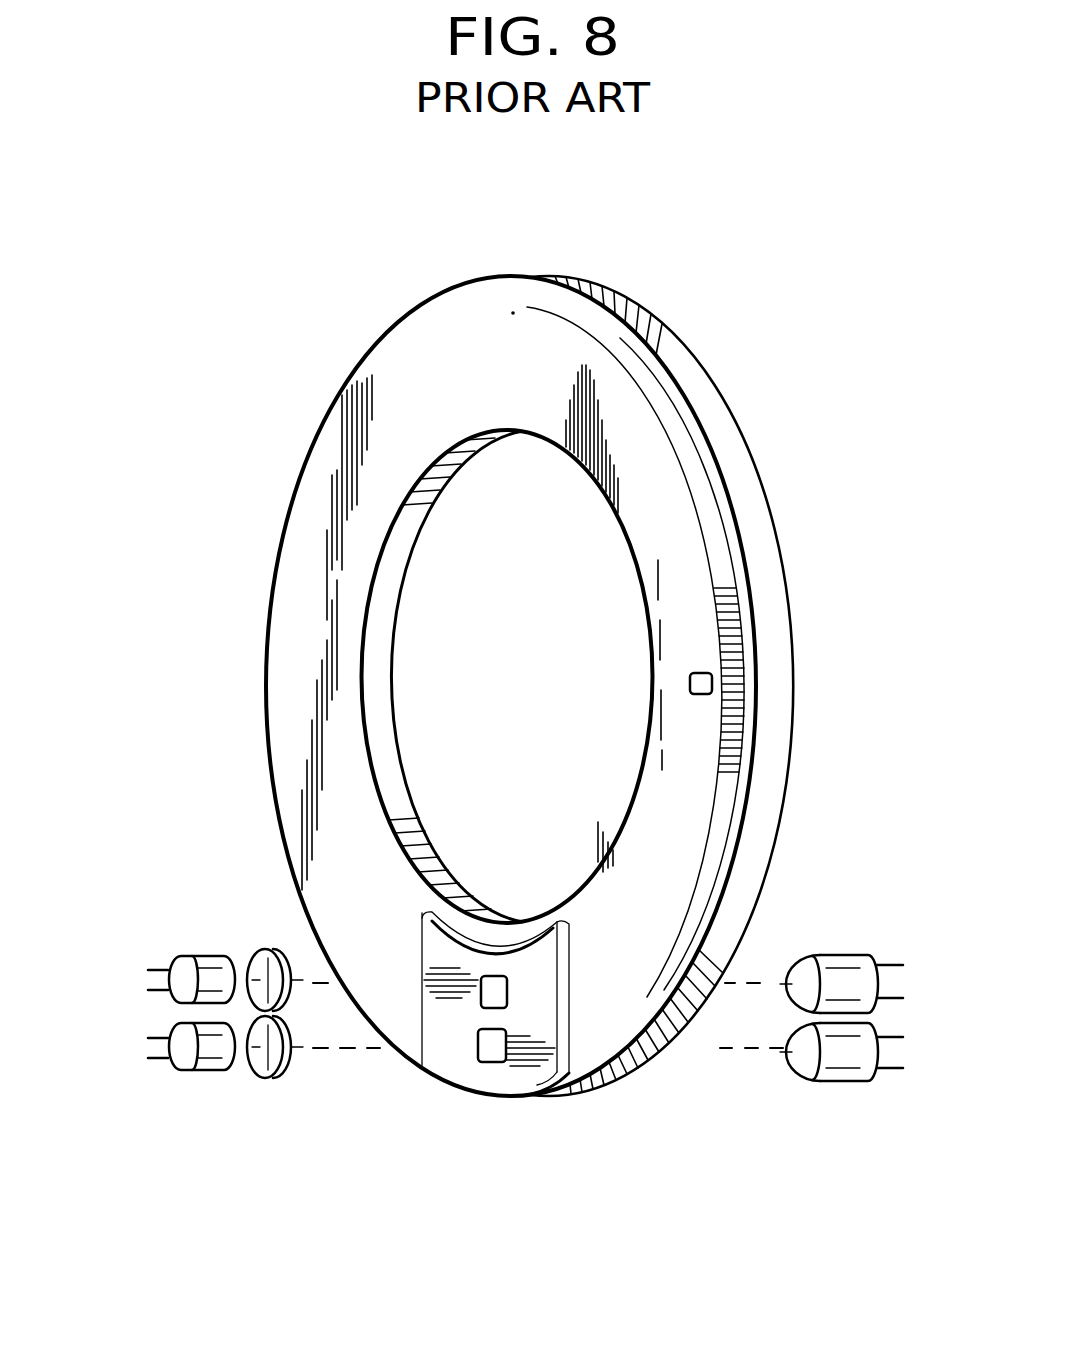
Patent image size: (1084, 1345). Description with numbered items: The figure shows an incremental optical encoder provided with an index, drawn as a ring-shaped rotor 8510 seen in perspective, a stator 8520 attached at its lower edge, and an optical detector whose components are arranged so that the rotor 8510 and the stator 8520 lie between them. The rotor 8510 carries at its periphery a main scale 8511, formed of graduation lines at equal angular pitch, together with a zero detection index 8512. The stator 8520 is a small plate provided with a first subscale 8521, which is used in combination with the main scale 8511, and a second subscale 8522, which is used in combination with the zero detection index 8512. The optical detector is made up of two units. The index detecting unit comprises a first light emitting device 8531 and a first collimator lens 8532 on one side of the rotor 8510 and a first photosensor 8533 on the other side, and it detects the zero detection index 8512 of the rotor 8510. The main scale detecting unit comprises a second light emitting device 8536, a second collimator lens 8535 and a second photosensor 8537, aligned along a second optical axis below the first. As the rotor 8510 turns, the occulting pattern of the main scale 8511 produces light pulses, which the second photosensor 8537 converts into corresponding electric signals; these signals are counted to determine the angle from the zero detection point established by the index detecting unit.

The rotor 8510 is at (304, 556).
The main scale 8511 is at (747, 645).
The zero detection index 8512 is at (698, 695).
The stator 8520 is at (538, 1022).
The first subscale 8521 is at (490, 1063).
The second subscale 8522 is at (496, 977).
The first light emitting device 8531 is at (203, 955).
The first collimator lens 8532 is at (267, 948).
The first photosensor 8533 is at (843, 955).
The second collimator lens 8535 is at (208, 1070).
The second light emitting device 8536 is at (270, 1078).
The second photosensor 8537 is at (832, 1083).